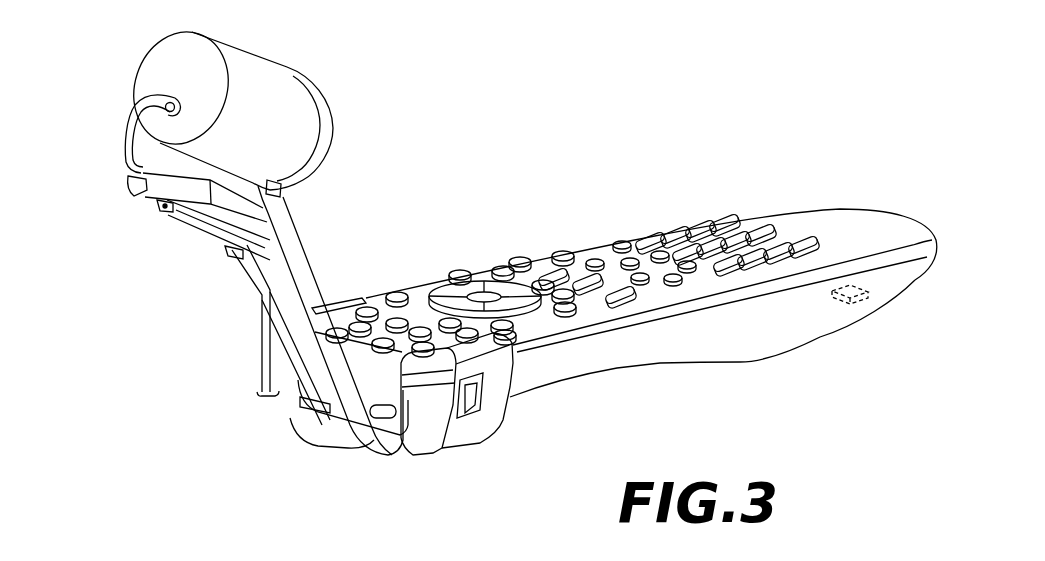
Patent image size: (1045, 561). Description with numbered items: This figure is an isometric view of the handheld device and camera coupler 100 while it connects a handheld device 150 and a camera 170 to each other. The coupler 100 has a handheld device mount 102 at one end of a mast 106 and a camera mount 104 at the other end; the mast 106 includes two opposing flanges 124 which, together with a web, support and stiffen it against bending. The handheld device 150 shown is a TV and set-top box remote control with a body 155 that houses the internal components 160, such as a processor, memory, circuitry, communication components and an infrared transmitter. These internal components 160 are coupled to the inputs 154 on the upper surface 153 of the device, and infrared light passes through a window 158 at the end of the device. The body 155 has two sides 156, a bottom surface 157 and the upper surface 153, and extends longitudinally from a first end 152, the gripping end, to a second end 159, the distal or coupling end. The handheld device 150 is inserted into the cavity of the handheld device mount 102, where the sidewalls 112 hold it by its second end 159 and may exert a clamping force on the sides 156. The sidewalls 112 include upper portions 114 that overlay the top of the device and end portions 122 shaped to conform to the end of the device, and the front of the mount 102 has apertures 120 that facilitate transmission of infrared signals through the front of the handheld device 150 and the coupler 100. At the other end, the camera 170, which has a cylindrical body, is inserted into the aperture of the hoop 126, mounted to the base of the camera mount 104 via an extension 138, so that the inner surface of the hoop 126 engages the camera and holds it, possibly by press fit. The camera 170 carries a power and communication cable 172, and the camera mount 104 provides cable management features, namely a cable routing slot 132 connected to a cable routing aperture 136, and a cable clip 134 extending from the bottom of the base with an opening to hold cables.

The handheld device and camera coupler 100 is at (423, 118).
The handheld device mount 102 is at (397, 468).
The camera mount 104 is at (122, 60).
The mast 106 is at (227, 394).
The sidewalls 112 is at (327, 283).
The upper portions 114 is at (362, 298).
The apertures 120 is at (370, 414).
The end portions 122 is at (425, 470).
The flanges 124 is at (287, 287).
The hoop 126 is at (320, 105).
The cable routing slot 132 is at (130, 181).
The cable clip 134 is at (227, 250).
The cable routing aperture 136 is at (163, 204).
The extension 138 is at (276, 196).
The handheld device 150 is at (853, 183).
The first end 152 is at (823, 338).
The upper surface 153 is at (827, 227).
The inputs 154 is at (560, 252).
The body 155 is at (645, 357).
The sides 156 is at (743, 345).
The bottom surface 157 is at (617, 370).
The window 158 is at (381, 418).
The second end 159 is at (418, 290).
The internal components 160 is at (862, 300).
The camera 170 is at (254, 63).
The power and communication cable 172 is at (126, 127).